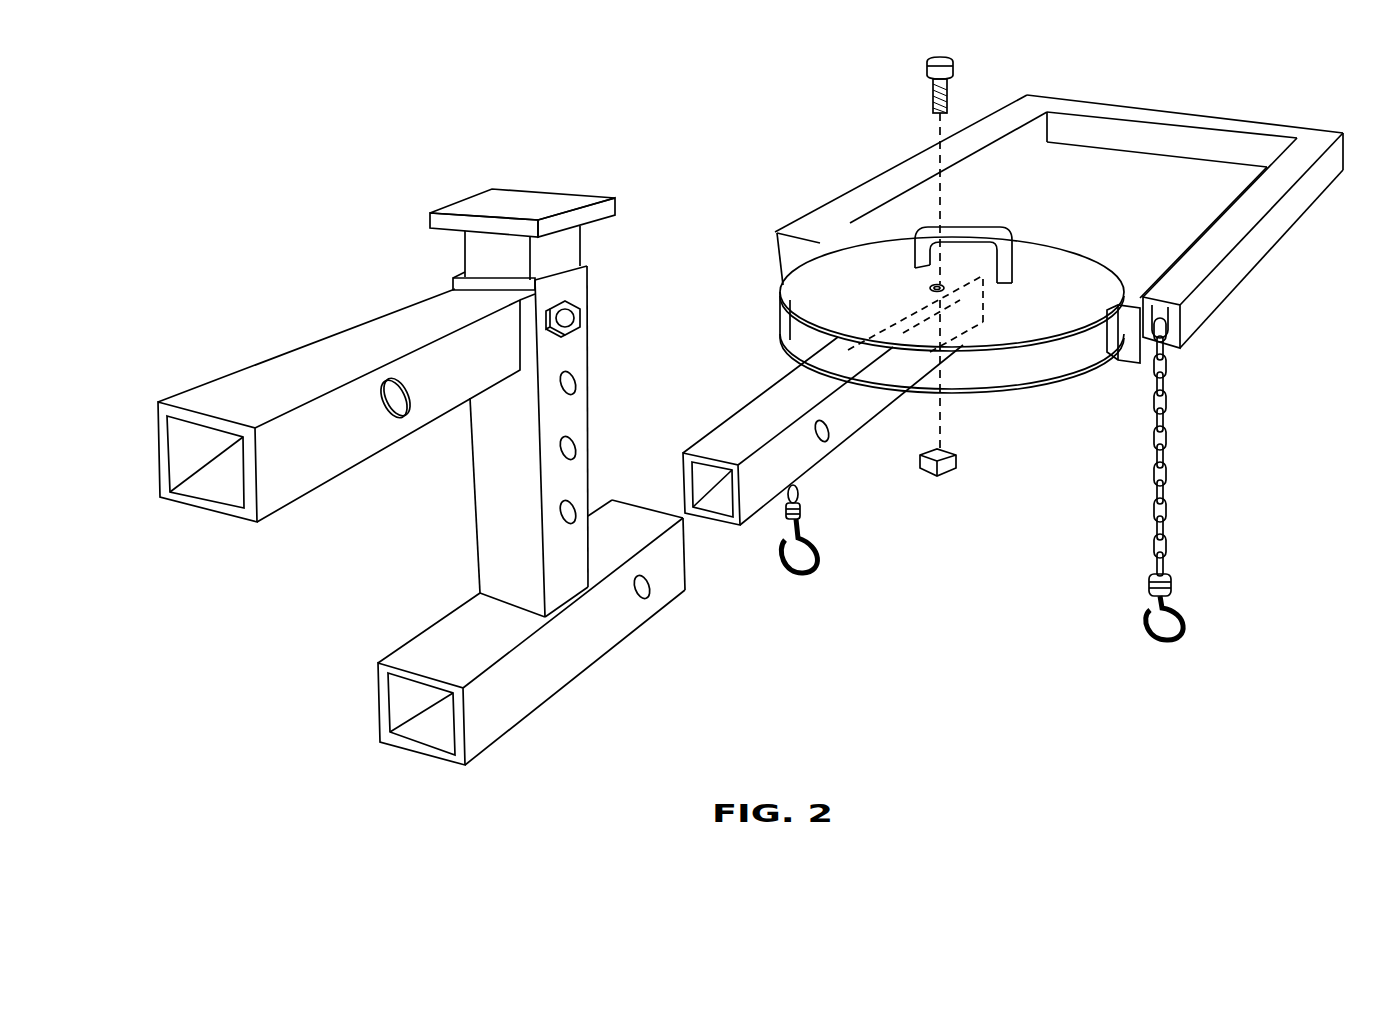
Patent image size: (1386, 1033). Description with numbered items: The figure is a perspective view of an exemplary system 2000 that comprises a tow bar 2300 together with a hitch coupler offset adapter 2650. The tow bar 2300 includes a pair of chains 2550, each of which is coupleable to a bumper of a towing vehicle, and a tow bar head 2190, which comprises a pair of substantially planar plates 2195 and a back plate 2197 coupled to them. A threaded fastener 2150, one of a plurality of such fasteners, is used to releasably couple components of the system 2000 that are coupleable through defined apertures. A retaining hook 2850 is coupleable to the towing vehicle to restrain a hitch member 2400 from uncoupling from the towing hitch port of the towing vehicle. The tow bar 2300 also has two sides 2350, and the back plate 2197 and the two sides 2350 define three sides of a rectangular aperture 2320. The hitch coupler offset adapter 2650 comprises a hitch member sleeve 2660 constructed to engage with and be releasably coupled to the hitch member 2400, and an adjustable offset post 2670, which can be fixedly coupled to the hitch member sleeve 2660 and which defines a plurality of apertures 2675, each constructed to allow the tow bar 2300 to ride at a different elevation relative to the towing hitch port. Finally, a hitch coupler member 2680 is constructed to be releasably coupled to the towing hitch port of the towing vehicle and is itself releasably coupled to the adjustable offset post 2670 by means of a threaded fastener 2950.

The system 2000 is at (700, 115).
The threaded fastener 2150 is at (932, 101).
The tow bar head 2190 is at (952, 289).
The substantially planar plates 2195 is at (1022, 328).
The back plate 2197 is at (1107, 331).
The tow bar 2300 is at (860, 200).
The rectangular aperture 2320 is at (1155, 170).
The sides 2350 is at (1193, 232).
The hitch member 2400 is at (868, 395).
The chains 2550 is at (996, 479).
The hitch coupler offset adapter 2650 is at (463, 258).
The hitch member sleeve 2660 is at (531, 632).
The adjustable offset post 2670 is at (529, 441).
The apertures 2675 is at (572, 508).
The hitch coupler member 2680 is at (339, 405).
The retaining hook 2850 is at (795, 568).
The threaded fastener 2950 is at (570, 316).